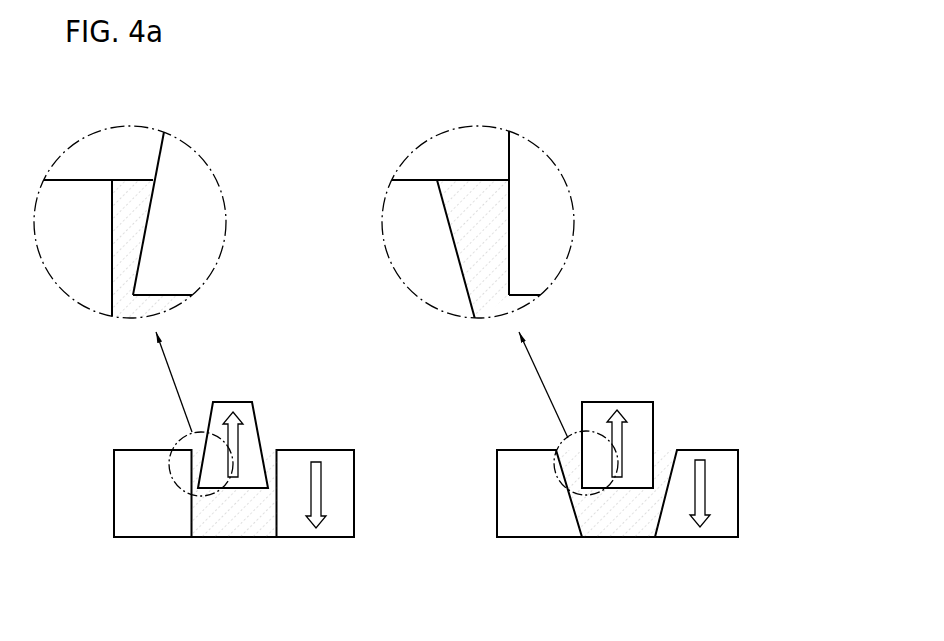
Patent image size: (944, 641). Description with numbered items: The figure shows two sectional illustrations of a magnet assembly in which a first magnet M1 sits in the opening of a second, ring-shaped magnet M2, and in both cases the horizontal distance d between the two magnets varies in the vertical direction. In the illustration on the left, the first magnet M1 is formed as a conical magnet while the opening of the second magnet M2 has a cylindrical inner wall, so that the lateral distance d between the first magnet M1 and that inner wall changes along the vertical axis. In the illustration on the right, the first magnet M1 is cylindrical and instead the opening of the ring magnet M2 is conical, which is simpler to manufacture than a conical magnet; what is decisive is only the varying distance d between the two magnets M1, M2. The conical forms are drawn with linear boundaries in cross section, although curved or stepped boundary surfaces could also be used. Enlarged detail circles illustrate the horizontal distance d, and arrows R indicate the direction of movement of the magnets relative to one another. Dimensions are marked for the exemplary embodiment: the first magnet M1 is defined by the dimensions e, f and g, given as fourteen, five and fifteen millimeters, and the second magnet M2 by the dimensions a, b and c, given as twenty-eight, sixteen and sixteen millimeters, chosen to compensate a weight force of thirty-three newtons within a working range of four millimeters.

The first magnet M1 is at (252, 415).
The second magnet M2 is at (343, 493).
The direction of movement R is at (233, 345).
The dimension a of second magnet a is at (354, 537).
The dimension b of second magnet b is at (114, 450).
The dimension c of second magnet c is at (276, 597).
The horizontal distance d is at (146, 220).
The dimension e of first magnet e is at (274, 519).
The dimension f of first magnet f is at (252, 400).
The dimension g of first magnet g is at (213, 402).